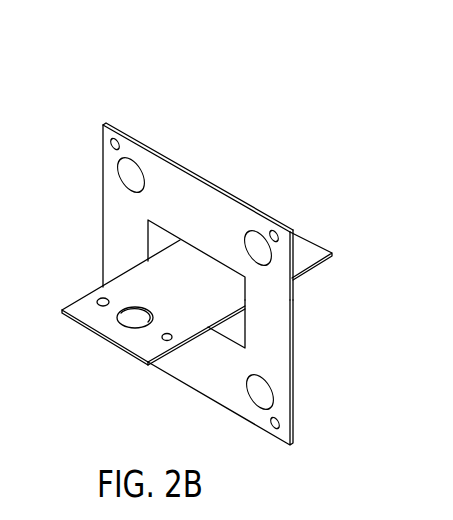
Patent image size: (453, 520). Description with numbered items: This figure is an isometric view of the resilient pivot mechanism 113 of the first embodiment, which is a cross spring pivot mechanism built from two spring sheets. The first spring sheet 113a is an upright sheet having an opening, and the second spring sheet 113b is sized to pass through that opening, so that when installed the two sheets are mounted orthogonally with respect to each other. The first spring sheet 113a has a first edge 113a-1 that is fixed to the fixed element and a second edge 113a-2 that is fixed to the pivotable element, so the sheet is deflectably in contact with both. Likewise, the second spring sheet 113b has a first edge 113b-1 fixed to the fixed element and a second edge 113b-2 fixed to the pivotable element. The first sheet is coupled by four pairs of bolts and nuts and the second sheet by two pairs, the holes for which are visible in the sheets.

The resilient pivot mechanism 113 is at (276, 82).
The first spring sheet 113a is at (101, 167).
The first edge of first spring sheet 113a-1 is at (205, 193).
The second edge of first spring sheet 113a-2 is at (191, 384).
The second spring sheet 113b is at (129, 282).
The first edge of second spring sheet 113b-1 is at (92, 328).
The second edge of second spring sheet 113b-2 is at (311, 246).